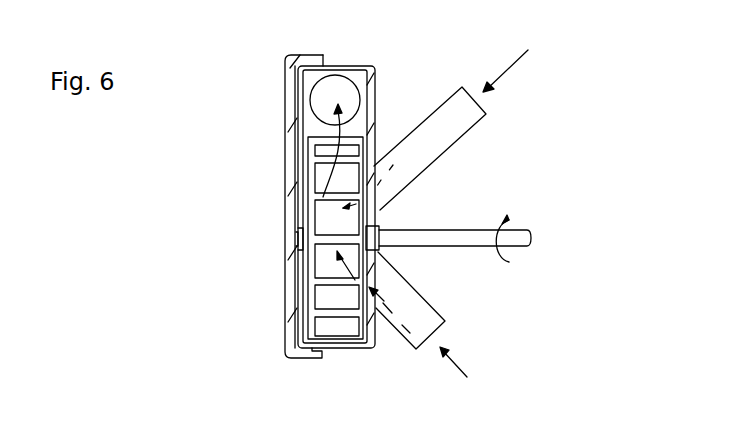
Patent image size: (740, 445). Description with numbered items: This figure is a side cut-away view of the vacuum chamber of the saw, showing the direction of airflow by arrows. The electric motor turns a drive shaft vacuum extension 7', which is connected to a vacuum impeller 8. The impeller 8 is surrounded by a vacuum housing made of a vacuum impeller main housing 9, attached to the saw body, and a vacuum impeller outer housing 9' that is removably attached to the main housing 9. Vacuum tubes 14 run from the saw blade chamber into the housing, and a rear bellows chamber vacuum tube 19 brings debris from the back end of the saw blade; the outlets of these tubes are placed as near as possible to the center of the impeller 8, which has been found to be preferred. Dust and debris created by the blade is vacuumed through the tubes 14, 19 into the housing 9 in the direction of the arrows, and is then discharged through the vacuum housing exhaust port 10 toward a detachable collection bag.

The drive shaft vacuum extension 7' is at (469, 266).
The vacuum impeller 8 is at (310, 193).
The vacuum impeller main housing 9 is at (365, 188).
The vacuum impeller outer housing 9' is at (249, 206).
The vacuum housing exhaust port 10 is at (327, 92).
The vacuum tubes 14 is at (456, 123).
The rear bellows chamber vacuum tube 19 is at (425, 322).